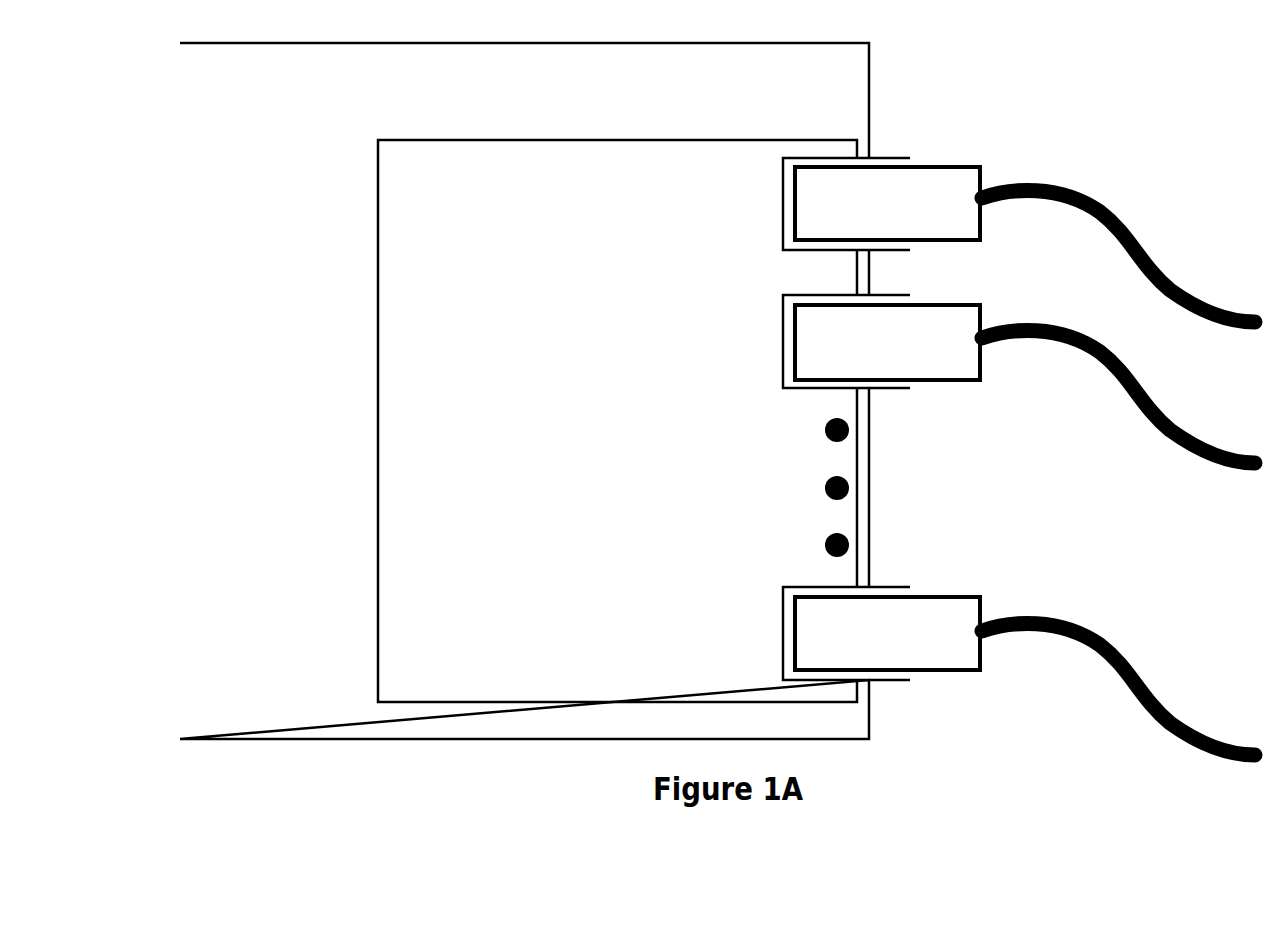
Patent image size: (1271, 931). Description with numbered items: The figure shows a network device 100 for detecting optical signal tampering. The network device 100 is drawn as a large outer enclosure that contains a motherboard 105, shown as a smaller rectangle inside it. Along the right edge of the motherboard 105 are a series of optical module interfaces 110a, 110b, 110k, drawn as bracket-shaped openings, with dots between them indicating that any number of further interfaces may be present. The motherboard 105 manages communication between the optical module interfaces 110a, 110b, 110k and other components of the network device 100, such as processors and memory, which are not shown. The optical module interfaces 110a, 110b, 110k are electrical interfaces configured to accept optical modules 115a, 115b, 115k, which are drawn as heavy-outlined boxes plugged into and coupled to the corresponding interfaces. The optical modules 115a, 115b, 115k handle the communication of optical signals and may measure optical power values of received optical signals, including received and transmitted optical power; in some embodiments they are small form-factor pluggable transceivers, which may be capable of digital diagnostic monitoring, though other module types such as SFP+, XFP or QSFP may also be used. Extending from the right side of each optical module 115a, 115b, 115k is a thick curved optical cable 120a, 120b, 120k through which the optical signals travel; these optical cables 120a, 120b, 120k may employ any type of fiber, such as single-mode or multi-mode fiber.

The network device 100 is at (581, 108).
The motherboard 105 is at (636, 445).
The optical module interface 110a is at (888, 157).
The optical module interface 110b is at (888, 294).
The optical module interface 110k is at (888, 586).
The optical module 115a is at (862, 213).
The optical module 115b is at (862, 352).
The optical module 115k is at (862, 643).
The optical cable 120a is at (1126, 226).
The optical cable 120b is at (1127, 367).
The optical cable 120k is at (1127, 660).